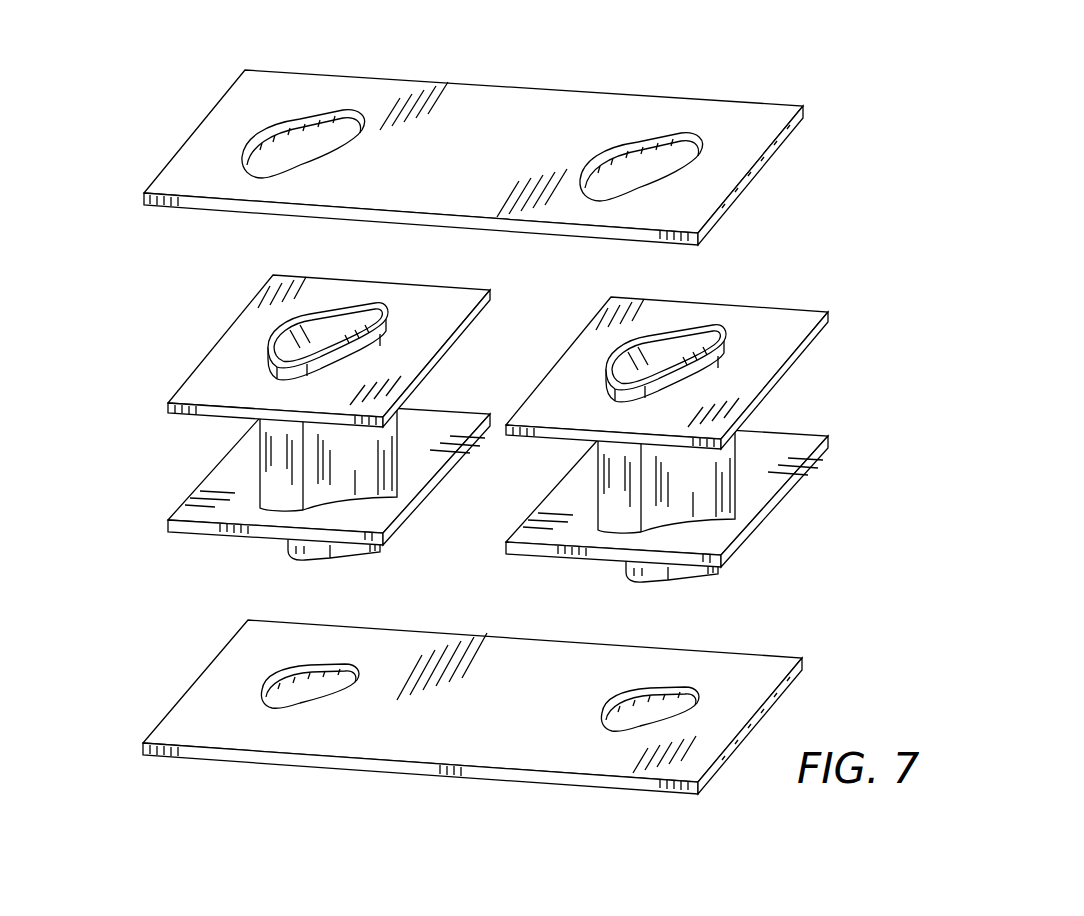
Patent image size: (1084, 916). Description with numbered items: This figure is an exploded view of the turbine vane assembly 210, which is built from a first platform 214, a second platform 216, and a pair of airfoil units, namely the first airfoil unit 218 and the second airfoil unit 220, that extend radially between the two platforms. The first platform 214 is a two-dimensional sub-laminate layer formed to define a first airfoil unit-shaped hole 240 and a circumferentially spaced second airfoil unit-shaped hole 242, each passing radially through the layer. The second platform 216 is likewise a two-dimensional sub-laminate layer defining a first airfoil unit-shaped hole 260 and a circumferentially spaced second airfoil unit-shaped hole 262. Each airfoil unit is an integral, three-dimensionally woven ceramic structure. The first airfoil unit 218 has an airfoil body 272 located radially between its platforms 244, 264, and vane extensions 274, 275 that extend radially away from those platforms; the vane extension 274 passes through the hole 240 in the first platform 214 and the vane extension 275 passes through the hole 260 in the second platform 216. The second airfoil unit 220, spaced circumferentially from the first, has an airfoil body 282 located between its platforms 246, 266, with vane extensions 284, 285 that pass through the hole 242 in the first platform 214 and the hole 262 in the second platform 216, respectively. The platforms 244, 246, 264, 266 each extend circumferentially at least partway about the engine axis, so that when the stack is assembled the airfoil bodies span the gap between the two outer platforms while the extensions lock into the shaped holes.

The turbine vane assembly 210 is at (162, 122).
The first platform 214 is at (792, 160).
The second platform 216 is at (815, 662).
The first airfoil unit 218 is at (815, 370).
The second airfoil unit 220 is at (165, 408).
The first airfoil unit-shaped hole 240 is at (638, 115).
The second airfoil unit-shaped hole 242 is at (298, 145).
The platform 244 is at (673, 335).
The platform 246 is at (225, 367).
The first airfoil unit-shaped hole 260 is at (643, 663).
The second airfoil unit-shaped hole 262 is at (300, 697).
The platform 264 is at (691, 495).
The platform 266 is at (185, 510).
The airfoil body 272 is at (709, 462).
The vane extension 274 is at (691, 332).
The vane extension 275 is at (689, 603).
The airfoil body 282 is at (260, 452).
The vane extension 284 is at (335, 310).
The vane extension 285 is at (282, 552).